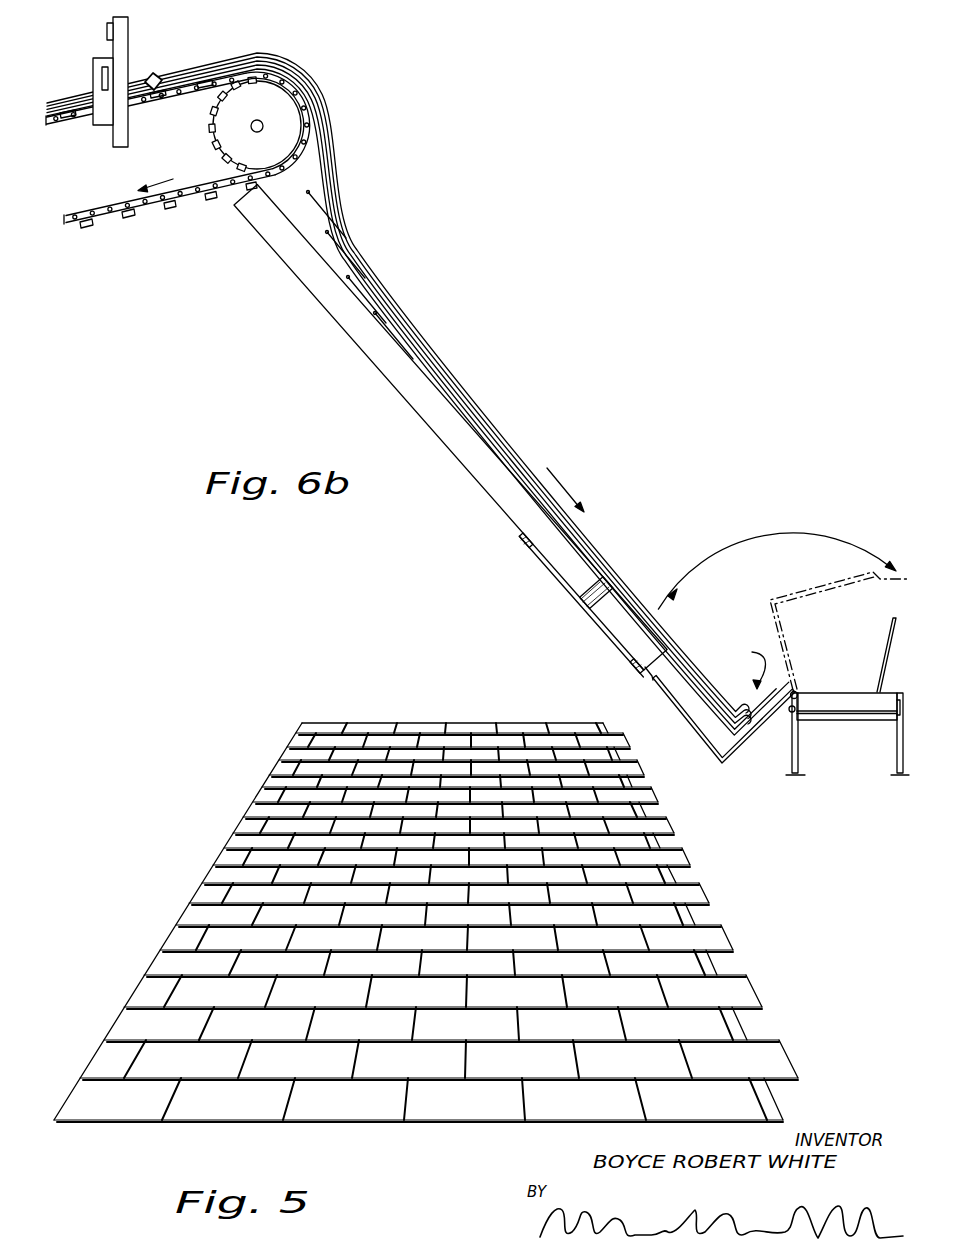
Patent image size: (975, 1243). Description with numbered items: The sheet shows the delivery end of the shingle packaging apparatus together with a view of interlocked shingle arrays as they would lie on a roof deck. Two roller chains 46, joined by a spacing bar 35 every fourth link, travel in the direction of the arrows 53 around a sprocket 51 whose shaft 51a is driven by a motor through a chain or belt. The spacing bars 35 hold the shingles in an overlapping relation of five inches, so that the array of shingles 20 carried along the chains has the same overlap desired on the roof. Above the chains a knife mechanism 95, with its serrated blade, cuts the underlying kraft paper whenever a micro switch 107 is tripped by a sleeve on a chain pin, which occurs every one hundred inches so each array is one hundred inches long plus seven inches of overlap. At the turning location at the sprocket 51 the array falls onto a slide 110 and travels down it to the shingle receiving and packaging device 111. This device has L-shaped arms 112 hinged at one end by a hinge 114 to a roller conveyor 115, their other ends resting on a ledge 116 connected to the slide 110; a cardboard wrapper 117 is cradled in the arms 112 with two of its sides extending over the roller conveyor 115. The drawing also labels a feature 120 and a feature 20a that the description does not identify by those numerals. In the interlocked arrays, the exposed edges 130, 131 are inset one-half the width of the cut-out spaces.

In FIG. 6B, the knife mechanism 95 is at (128, 32).
In FIG. 6B, the micro switch 107 is at (153, 73).
In FIG. 6B, the roller chain 46 is at (60, 126).
In FIG. 6B, the sprocket 51 is at (268, 158).
In FIG. 6B, the shaft 51a is at (254, 126).
In FIG. 6B, the arrows 53 is at (165, 176).
In FIG. 6B, the spacing bar 35 is at (162, 213).
In FIG. 6B, the slide 110 is at (340, 327).
In FIG. 6B, the array of shingles 20 is at (447, 372).
In FIG. 5, the array of shingles 20 is at (316, 722).
In FIG. 6B, the ledge 116 is at (538, 563).
In FIG. 6B, the swing path of guide shoe 120 is at (758, 526).
In FIG. 6B, the shingle receiving and packaging device 111 is at (816, 631).
In FIG. 6B, the hinge 114 is at (797, 691).
In FIG. 6B, the roller conveyor 115 is at (848, 725).
In FIG. 6B, the L-shaped arms 112 is at (652, 683).
In FIG. 6B, the cardboard wrapper 117 is at (762, 725).
In FIG. 5, the folded shingle stack 20a is at (537, 722).
In FIG. 5, the edge 131 is at (245, 803).
In FIG. 5, the edge 130 is at (665, 818).